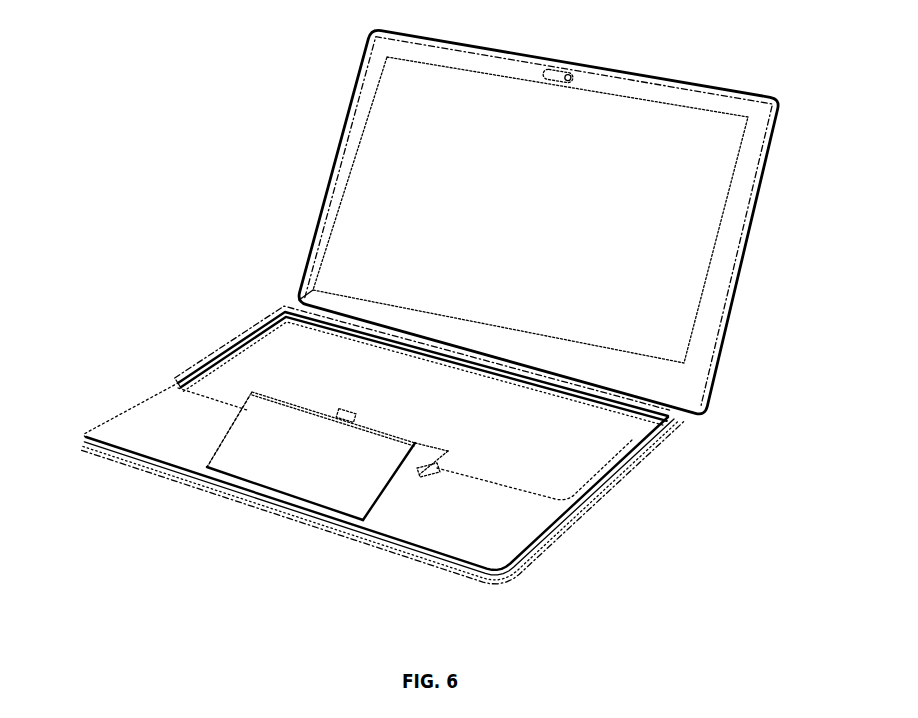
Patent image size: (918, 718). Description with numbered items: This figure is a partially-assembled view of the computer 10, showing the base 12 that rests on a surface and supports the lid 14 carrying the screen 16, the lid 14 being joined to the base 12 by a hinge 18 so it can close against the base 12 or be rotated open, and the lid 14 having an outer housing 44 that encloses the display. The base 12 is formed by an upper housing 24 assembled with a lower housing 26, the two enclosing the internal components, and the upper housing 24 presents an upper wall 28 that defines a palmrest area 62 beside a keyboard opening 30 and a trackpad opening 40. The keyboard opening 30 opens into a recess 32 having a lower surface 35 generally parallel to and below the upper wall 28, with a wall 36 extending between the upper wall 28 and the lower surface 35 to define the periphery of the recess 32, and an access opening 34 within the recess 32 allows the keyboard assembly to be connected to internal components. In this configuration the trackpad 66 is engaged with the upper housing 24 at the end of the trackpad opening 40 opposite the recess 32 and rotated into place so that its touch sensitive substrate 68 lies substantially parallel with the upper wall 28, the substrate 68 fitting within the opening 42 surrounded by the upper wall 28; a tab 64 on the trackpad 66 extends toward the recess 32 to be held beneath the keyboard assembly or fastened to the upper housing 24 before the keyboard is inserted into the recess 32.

The computer 10 is at (120, 38).
The base 12 is at (151, 346).
The lid 14 is at (322, 80).
The screen 16 is at (545, 184).
The hinge 18 is at (313, 290).
The upper housing 24 is at (110, 416).
The lower housing 26 is at (498, 588).
The upper wall 28 is at (233, 338).
The keyboard opening 30 is at (586, 464).
The recess 32 is at (454, 402).
The access opening 34 is at (422, 449).
The lower surface 35 is at (536, 432).
The wall 36 is at (258, 338).
The trackpad opening 40 is at (400, 492).
The opening 42 is at (747, 300).
The outer housing 44 is at (735, 252).
The palmrest area 62 is at (173, 402).
The tab 64 is at (356, 417).
The trackpad 66 is at (248, 408).
The touch sensitive substrate 68 is at (315, 452).